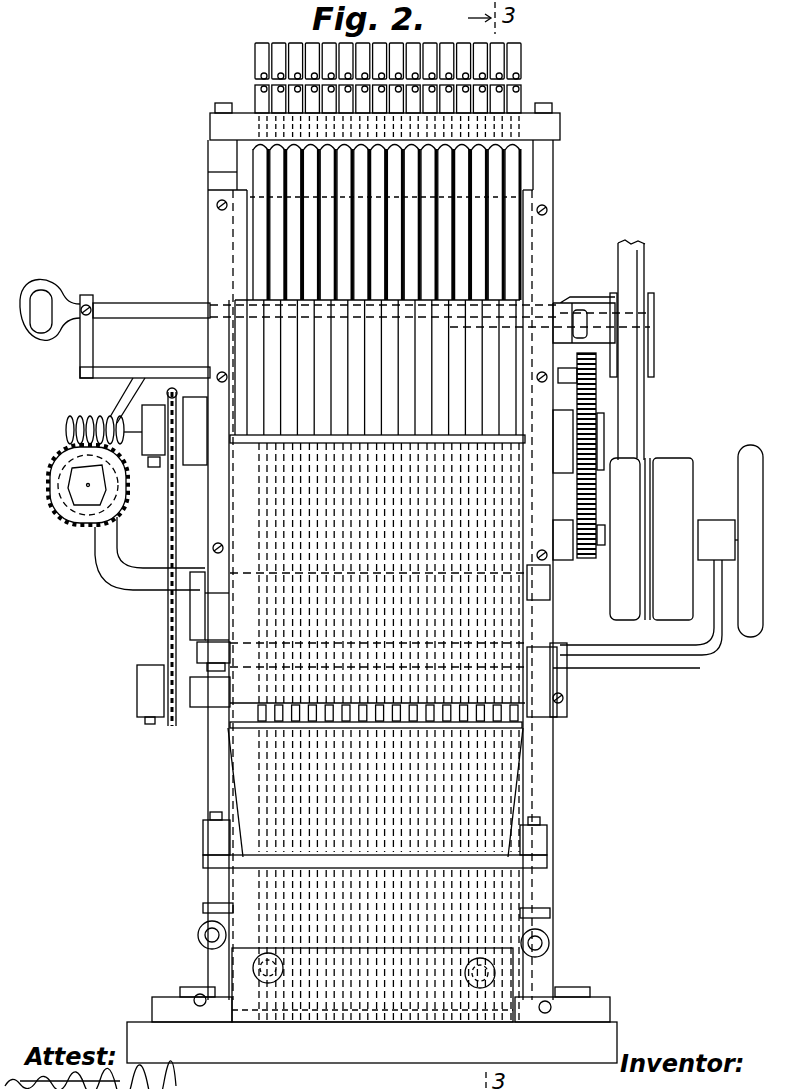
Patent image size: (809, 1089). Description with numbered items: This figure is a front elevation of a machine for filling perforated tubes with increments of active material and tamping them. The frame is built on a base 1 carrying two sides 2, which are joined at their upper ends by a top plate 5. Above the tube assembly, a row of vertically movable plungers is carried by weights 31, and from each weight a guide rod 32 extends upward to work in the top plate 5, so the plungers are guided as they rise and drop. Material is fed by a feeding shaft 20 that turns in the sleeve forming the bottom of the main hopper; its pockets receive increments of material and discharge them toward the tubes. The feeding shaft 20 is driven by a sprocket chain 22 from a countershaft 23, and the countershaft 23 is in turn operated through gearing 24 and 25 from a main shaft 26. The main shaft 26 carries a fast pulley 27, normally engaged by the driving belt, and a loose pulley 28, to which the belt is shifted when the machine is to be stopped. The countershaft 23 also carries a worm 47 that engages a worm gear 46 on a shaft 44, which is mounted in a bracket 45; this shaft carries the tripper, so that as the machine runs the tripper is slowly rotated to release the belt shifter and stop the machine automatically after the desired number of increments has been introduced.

The base 1 is at (372, 1005).
The sides 2 is at (208, 778).
The top plate 5 is at (560, 128).
The feeding shaft 20 is at (190, 700).
The sprocket chain 22 is at (168, 622).
The countershaft 23 is at (185, 462).
The gearing 24 is at (597, 400).
The gearing 25 is at (588, 555).
The main shaft 26 is at (606, 562).
The fast pulley 27 is at (648, 463).
The loose pulley 28 is at (690, 463).
The weights 31 is at (426, 568).
The guide rods 32 is at (312, 62).
The shaft 44 is at (88, 490).
The bracket 45 is at (128, 575).
The worm gear 46 is at (50, 491).
The worm 47 is at (64, 426).